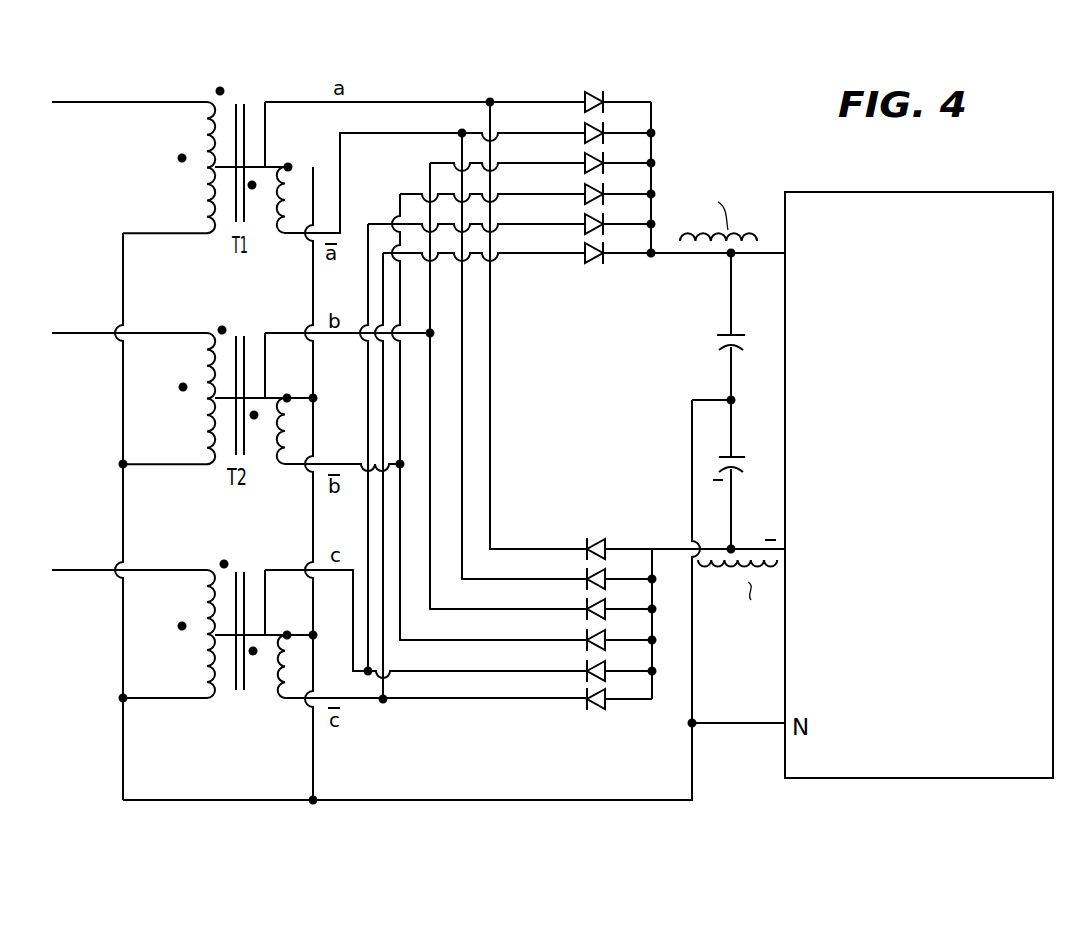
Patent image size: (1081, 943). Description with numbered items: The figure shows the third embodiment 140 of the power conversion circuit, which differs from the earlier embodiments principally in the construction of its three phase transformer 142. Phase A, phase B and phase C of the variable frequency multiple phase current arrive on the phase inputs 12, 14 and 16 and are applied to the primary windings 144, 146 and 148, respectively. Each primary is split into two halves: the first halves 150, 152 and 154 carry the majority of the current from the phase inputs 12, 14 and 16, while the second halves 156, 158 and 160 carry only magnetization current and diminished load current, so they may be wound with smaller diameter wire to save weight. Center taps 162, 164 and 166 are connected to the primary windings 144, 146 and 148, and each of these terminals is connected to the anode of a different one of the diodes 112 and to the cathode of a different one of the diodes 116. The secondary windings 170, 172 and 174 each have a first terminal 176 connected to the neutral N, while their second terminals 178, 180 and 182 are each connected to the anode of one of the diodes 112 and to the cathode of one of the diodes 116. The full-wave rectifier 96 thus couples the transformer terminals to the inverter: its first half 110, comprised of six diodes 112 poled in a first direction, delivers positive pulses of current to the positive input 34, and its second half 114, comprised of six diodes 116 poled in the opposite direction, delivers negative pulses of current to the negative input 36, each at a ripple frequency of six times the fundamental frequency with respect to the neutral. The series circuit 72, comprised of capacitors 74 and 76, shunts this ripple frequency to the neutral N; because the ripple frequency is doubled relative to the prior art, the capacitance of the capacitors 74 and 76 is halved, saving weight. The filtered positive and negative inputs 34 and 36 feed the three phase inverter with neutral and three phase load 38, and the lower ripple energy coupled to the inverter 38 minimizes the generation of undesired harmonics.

The phase A input 12 is at (38, 165).
The phase B input 14 is at (25, 403).
The phase C input 16 is at (30, 632).
The positive input 34 is at (774, 243).
The negative input 36 is at (781, 560).
The three phase inverter with neutral and three phase load 38 is at (930, 603).
The series circuit 72 is at (725, 328).
The capacitor 74 is at (716, 343).
The capacitor 76 is at (748, 463).
The full-wave rectifier 96 is at (515, 337).
The first half of the full-wave rectifier 110 is at (604, 185).
The diode 112 is at (598, 90).
The second half of the full-wave rectifier 114 is at (591, 601).
The diode 116 is at (595, 714).
The embodiment 140 is at (345, 804).
The three phase transformer 142 is at (177, 666).
The primary winding 144 is at (158, 163).
The primary winding 146 is at (150, 392).
The primary winding 148 is at (148, 632).
The first half of the primary winding 150 is at (198, 130).
The first half of the primary winding 152 is at (198, 362).
The first half of the primary winding 154 is at (198, 600).
The second half of the primary winding 156 is at (195, 203).
The second half of the primary winding 158 is at (197, 436).
The second half of the primary winding 160 is at (196, 673).
The center tap 162 is at (218, 159).
The center tap 164 is at (217, 390).
The center tap 166 is at (221, 628).
The secondary winding 170 is at (273, 156).
The secondary winding 172 is at (285, 380).
The secondary winding 174 is at (278, 619).
The first terminal 176 is at (287, 167).
The second terminal 178 is at (275, 235).
The second terminal 180 is at (272, 465).
The second terminal 182 is at (272, 705).